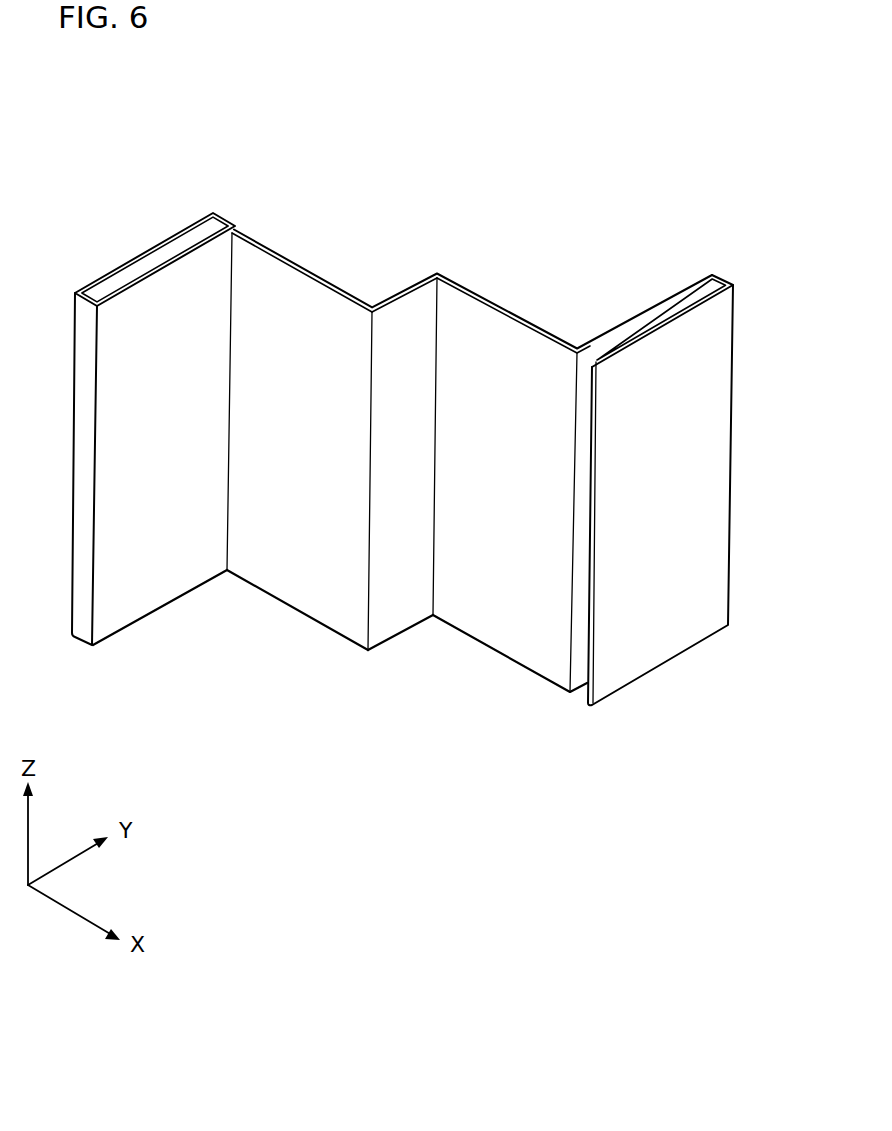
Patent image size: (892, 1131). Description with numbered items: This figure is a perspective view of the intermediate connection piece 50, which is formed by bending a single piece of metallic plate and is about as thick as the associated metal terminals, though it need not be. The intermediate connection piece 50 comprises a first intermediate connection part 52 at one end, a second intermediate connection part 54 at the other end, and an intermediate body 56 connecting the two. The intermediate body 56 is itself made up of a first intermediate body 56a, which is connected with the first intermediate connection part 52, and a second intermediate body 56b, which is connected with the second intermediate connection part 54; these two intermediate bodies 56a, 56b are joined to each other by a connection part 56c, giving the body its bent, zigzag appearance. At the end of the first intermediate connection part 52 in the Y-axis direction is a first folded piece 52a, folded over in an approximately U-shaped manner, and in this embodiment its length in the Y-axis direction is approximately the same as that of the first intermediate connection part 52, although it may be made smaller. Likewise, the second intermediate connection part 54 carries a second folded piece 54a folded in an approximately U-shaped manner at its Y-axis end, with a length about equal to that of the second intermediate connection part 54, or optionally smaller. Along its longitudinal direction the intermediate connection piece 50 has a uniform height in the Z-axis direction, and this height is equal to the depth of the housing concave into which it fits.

The intermediate connection piece 50 is at (515, 281).
The first intermediate connection part 52 is at (653, 306).
The first folded piece 52a is at (668, 632).
The second intermediate connection part 54 is at (143, 453).
The second folded piece 54a is at (118, 262).
The intermediate body 56 is at (381, 529).
The first intermediate body 56a is at (507, 615).
The second intermediate body 56b is at (306, 310).
The connection part 56c is at (407, 310).